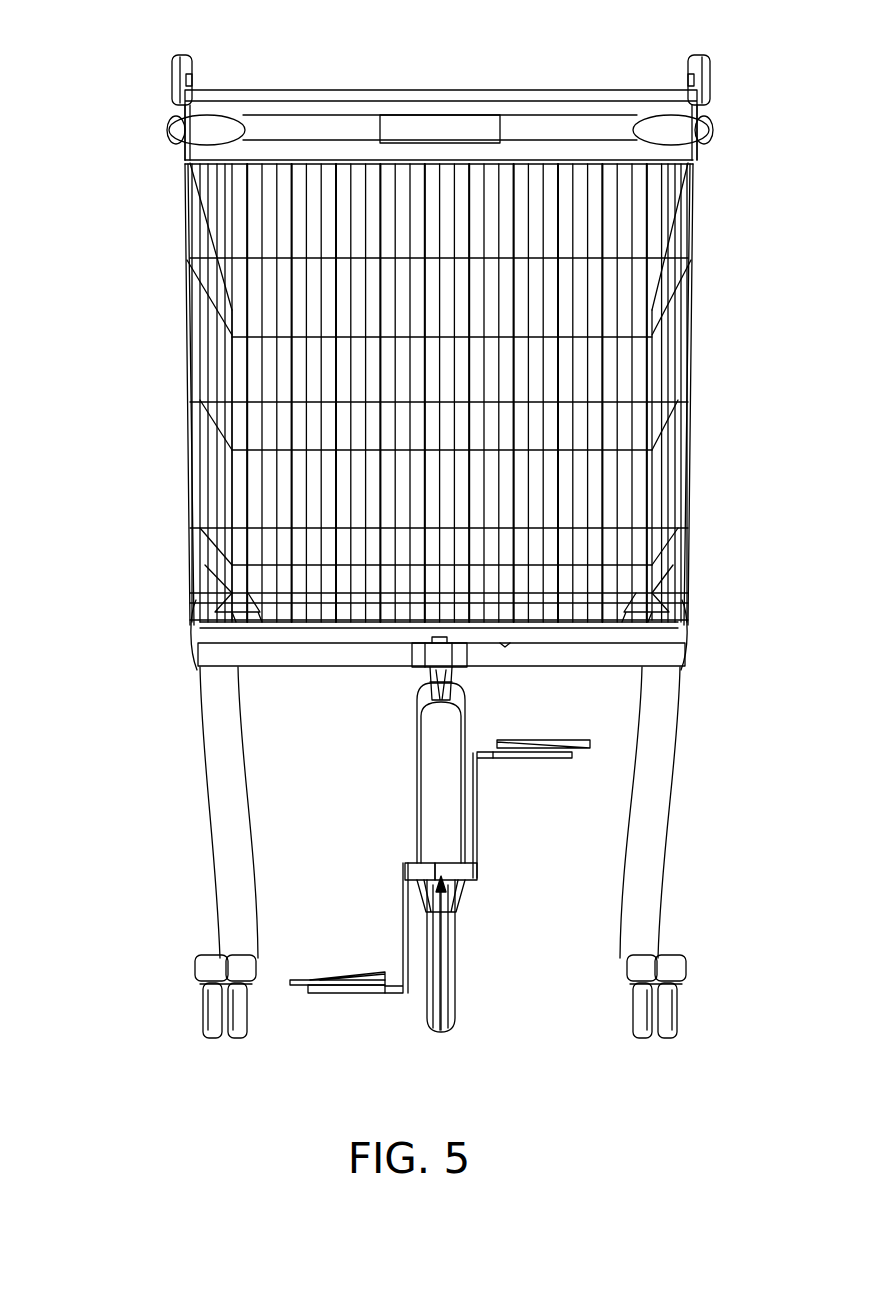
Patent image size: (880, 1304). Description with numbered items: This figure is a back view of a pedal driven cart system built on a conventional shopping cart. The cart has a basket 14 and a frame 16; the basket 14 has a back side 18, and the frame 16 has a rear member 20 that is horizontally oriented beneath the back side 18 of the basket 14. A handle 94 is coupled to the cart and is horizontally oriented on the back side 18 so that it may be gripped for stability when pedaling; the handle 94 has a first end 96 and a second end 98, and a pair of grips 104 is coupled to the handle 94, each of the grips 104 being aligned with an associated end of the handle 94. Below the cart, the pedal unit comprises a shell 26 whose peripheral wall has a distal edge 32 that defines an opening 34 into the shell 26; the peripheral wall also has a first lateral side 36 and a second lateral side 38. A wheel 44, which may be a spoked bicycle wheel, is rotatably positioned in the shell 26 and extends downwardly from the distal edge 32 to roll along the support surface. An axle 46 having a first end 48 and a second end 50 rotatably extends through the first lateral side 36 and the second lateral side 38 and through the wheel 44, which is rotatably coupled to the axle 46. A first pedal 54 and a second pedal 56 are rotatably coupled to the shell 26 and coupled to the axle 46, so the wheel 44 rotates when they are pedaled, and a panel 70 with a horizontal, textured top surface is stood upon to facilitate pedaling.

The basket 14 is at (190, 440).
The frame 16 is at (195, 665).
The back side 18 is at (278, 300).
The rear member 20 is at (352, 667).
The shell 26 is at (417, 726).
The distal edge 32 is at (460, 950).
The opening 34 is at (441, 1034).
The first lateral side 36 is at (417, 776).
The second lateral side 38 is at (463, 815).
The wheel 44 is at (426, 1012).
The axle 46 is at (456, 905).
The first end 48 is at (408, 870).
The second end 50 is at (472, 880).
The first pedal 54 is at (325, 990).
The second pedal 56 is at (572, 755).
The panel 70 is at (296, 990).
The handle 94 is at (295, 115).
The first end 96 is at (167, 130).
The second end 98 is at (713, 128).
The grips 104 is at (220, 122).